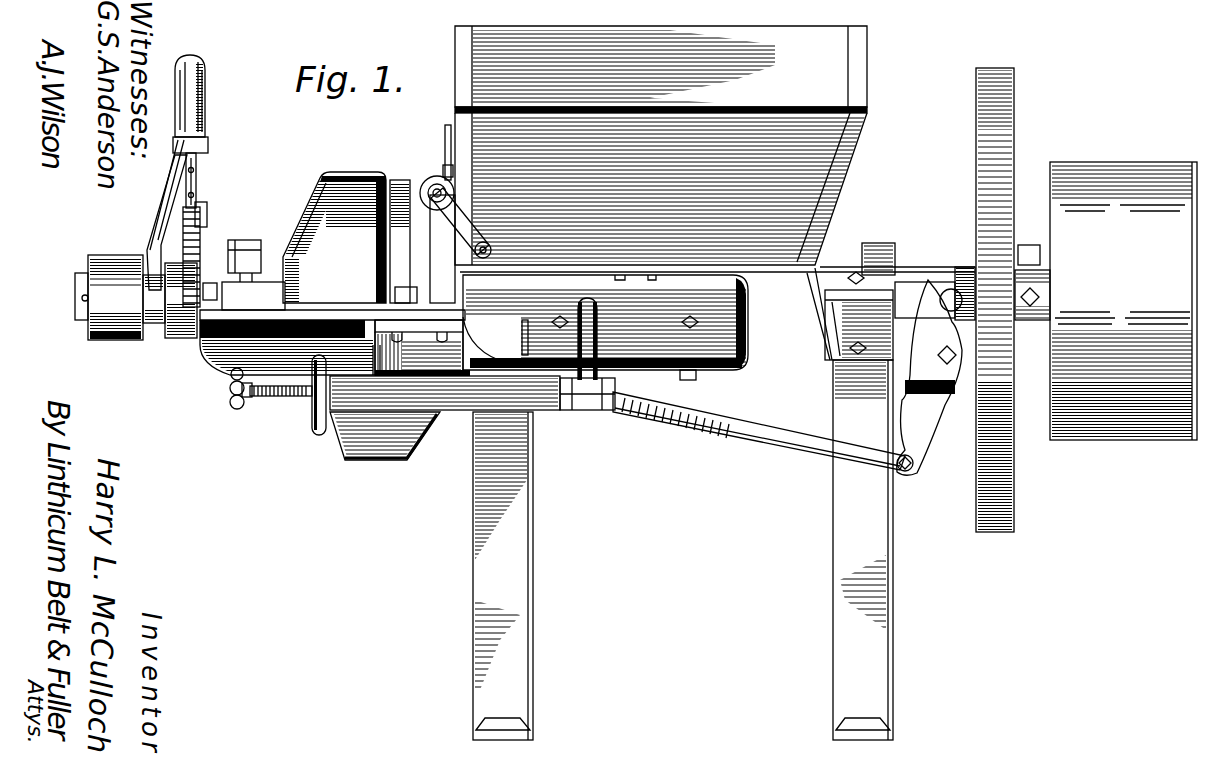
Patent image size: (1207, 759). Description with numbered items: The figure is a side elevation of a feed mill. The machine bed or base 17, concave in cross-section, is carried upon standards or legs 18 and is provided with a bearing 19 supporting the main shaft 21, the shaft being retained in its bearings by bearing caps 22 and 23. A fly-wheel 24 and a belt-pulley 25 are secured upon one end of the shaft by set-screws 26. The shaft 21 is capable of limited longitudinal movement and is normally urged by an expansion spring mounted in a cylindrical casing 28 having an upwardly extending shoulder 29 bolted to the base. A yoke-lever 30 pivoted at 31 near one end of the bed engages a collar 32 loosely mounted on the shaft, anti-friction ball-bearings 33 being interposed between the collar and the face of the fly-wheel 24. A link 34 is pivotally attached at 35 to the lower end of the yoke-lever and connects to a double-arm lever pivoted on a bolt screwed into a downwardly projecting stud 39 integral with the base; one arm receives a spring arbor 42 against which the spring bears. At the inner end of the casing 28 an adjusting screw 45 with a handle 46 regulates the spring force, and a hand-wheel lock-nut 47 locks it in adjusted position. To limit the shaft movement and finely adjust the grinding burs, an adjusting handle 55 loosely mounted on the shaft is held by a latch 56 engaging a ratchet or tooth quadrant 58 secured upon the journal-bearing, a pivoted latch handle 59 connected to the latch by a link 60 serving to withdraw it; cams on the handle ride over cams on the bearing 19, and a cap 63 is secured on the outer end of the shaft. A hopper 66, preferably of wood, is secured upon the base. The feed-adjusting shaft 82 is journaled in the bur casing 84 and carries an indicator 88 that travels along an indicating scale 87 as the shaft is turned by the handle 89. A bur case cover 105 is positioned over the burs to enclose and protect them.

The machine bed or base 17 is at (735, 345).
The standards or legs 18 is at (518, 618).
The bearing 19 is at (186, 337).
The main shaft 21 is at (74, 302).
The bearing cap 22 is at (272, 262).
The bearing cap 23 is at (838, 266).
The fly-wheel 24 is at (1012, 508).
The belt-pulley 25 is at (1130, 440).
The set-screws 26 is at (1036, 248).
The cylindrical casing 28 is at (468, 395).
The upwardly extending shoulder 29 is at (424, 335).
The yoke-lever 30 is at (926, 418).
The pivot 31 is at (944, 350).
The collar 32 is at (957, 280).
The anti-friction ball-bearings 33 is at (971, 266).
The link 34 is at (735, 425).
The pivot 35 is at (913, 467).
The downwardly projecting stud 39 is at (595, 390).
The spring arbor 42 is at (565, 412).
The adjusting screw 45 is at (272, 398).
The handle 46 is at (236, 410).
The hand-wheel lock-nut 47 is at (317, 434).
The adjusting handle 55 is at (197, 57).
The latch 56 is at (198, 170).
The ratchet or tooth quadrant 58 is at (202, 250).
The pivoted latch handle 59 is at (192, 92).
The link 60 is at (193, 190).
The cap 63 is at (108, 340).
The hopper 66 is at (766, 42).
The shaft 82 is at (455, 192).
The bur casing 84 is at (430, 180).
The indicating scale 87 is at (446, 130).
The indicator 88 is at (445, 165).
The handle 89 is at (470, 230).
The bur case cover 105 is at (357, 162).